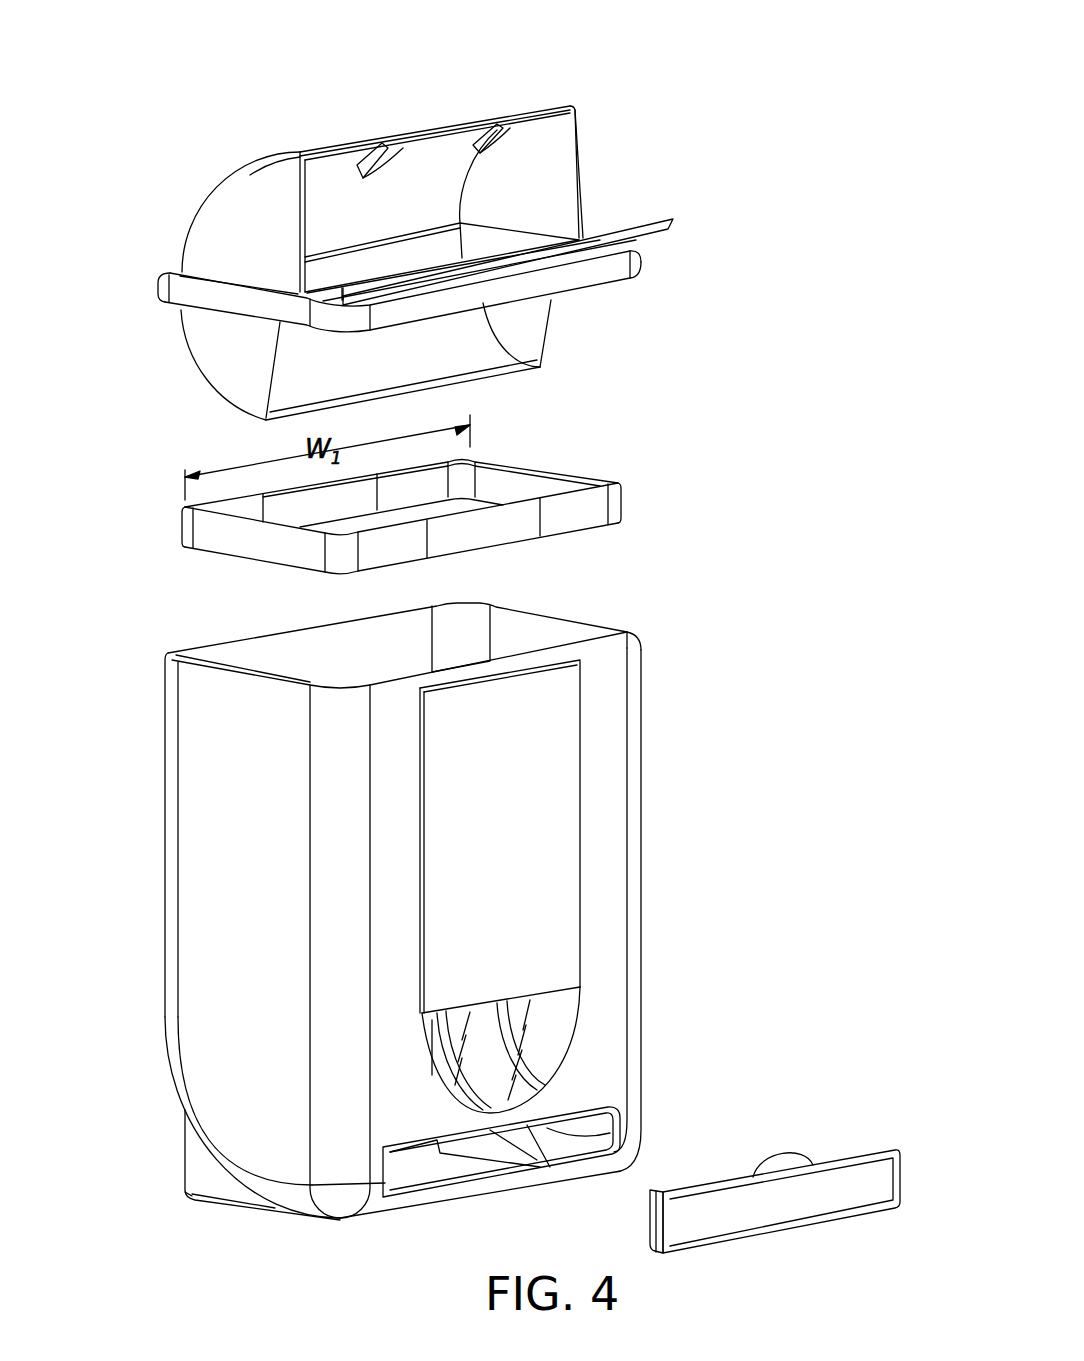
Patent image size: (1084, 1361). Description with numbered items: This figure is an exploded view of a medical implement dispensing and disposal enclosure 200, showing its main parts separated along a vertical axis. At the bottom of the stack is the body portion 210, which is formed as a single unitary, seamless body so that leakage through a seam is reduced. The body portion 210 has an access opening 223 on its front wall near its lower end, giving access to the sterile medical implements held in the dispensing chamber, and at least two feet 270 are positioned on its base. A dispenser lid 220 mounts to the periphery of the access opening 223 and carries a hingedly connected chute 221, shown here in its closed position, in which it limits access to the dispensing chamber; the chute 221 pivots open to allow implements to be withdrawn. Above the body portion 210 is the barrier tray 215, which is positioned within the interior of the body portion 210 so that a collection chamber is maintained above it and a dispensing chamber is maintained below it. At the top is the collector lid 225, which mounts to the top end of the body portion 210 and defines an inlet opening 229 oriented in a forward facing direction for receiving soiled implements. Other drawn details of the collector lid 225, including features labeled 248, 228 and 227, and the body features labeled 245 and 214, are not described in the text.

The enclosure 200 is at (222, 160).
The collector lid 225 is at (205, 208).
The inlet opening 229 is at (473, 243).
The retaining tabs 248 is at (360, 170).
The flat bar 228 is at (667, 227).
The lid lower portion 227 is at (250, 347).
The barrier tray 215 is at (622, 490).
The notch 245 is at (597, 612).
The body portion 210 is at (600, 825).
The feet 270 is at (582, 907).
The window opening 214 is at (582, 1028).
The access opening 223 is at (597, 1110).
The dispenser lid 220 is at (650, 1213).
The chute 221 is at (873, 1180).